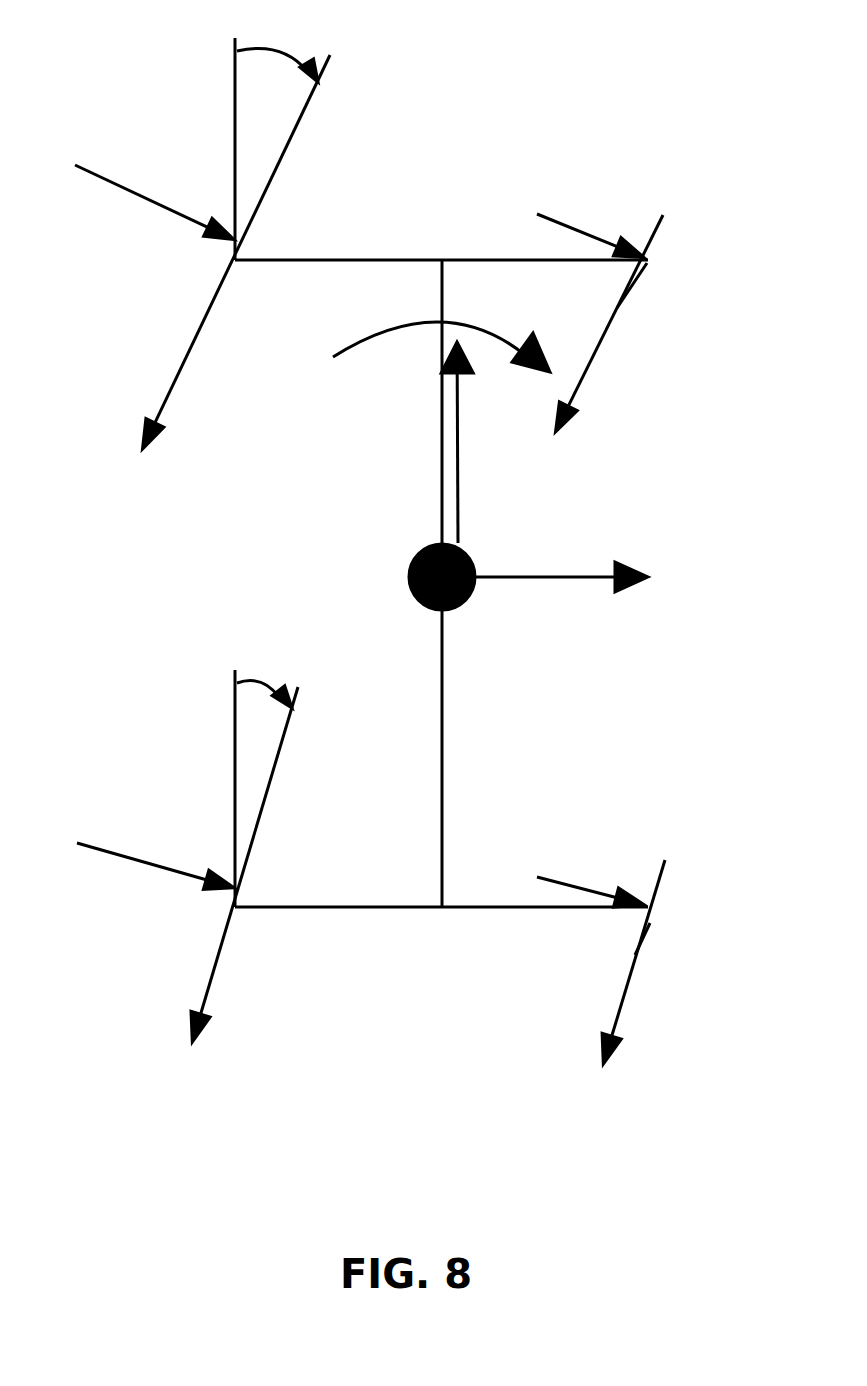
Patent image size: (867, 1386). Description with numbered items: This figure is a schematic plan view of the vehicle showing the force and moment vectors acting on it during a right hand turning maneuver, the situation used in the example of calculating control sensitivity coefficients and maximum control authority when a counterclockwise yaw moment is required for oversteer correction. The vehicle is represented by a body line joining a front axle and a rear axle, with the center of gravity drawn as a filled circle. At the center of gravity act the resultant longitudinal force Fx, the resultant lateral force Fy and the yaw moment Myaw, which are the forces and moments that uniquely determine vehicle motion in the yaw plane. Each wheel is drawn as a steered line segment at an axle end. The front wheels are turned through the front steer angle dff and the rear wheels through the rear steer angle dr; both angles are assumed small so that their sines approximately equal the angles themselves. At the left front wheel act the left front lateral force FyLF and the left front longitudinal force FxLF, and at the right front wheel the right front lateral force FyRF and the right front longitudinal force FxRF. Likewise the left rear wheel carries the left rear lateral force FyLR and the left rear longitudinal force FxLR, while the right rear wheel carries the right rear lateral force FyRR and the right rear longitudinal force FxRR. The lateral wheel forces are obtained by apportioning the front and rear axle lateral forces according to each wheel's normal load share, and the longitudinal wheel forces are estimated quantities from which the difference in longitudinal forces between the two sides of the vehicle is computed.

The left front lateral force FyLF is at (154, 185).
The left front longitudinal force FxLF is at (203, 252).
The right front lateral force FyRF is at (589, 201).
The right front longitudinal force FxRF is at (635, 323).
The longitudinal force Fx is at (488, 442).
The lateral force Fy is at (596, 586).
The left rear lateral force FyLR is at (146, 839).
The left rear longitudinal force FxLR is at (193, 864).
The right rear lateral force FyRR is at (589, 864).
The right rear longitudinal force FxRR is at (676, 962).
The front steer angle dff is at (277, 41).
The rear steer angle dr is at (264, 673).
The yaw moment Myaw is at (426, 369).